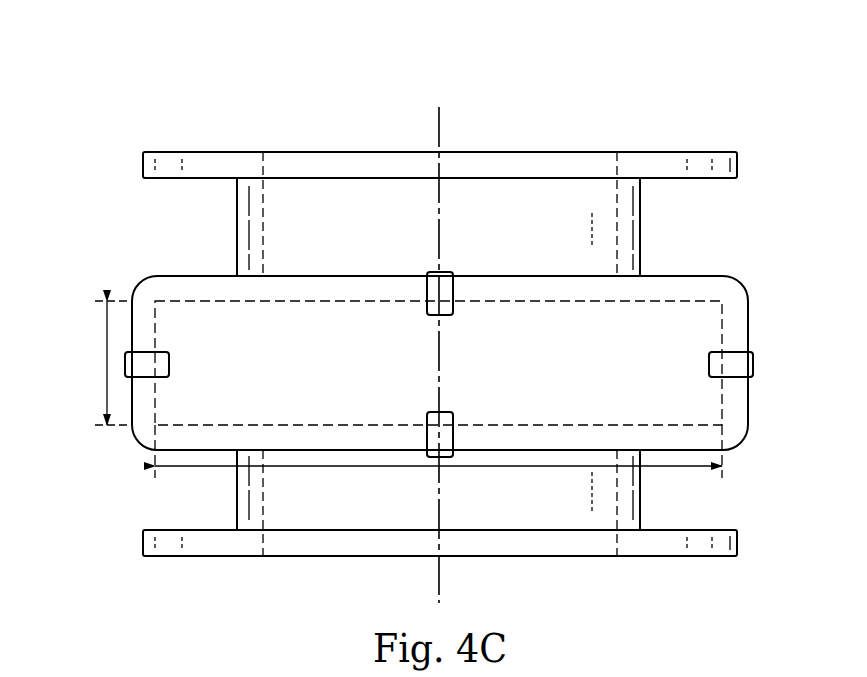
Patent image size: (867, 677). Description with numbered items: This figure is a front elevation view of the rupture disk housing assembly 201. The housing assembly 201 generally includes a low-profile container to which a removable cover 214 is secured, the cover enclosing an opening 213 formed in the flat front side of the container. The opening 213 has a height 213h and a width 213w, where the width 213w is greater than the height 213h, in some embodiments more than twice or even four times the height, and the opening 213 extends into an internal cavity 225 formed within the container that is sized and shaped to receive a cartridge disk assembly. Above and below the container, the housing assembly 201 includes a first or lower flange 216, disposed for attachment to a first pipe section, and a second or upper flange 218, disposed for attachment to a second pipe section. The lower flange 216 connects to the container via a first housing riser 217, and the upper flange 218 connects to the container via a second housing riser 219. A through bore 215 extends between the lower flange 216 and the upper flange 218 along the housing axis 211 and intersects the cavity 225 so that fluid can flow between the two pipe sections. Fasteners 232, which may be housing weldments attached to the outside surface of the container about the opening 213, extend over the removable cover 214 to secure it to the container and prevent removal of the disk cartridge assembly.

The housing assembly 201 is at (310, 95).
The axis 211 is at (441, 128).
The opening 213 is at (725, 342).
The height 213h is at (106, 363).
The width 213w is at (203, 468).
The removable cover 214 is at (188, 273).
The through bore 215 is at (615, 186).
The first flange 216 is at (675, 560).
The first housing riser 217 is at (641, 490).
The second flange 218 is at (690, 150).
The second housing riser 219 is at (641, 228).
The internal cavity 225 is at (337, 305).
The fasteners 232 is at (435, 278).